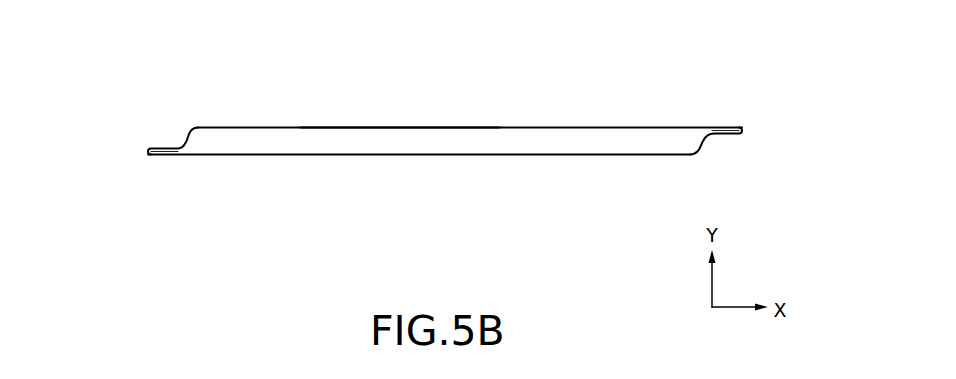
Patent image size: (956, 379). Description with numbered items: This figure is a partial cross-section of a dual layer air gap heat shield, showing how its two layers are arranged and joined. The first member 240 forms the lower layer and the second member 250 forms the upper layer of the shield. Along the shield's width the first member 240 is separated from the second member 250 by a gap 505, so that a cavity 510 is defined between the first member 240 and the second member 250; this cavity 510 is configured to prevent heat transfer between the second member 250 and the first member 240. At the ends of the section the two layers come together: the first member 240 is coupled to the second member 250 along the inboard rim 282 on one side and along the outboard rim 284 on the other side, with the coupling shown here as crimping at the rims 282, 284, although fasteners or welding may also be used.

The second member 250 is at (491, 127).
The first member 240 is at (607, 155).
The inboard rim 282 is at (122, 165).
The outboard rim 284 is at (766, 143).
The cavity 510 is at (395, 135).
The gap 505 is at (312, 92).